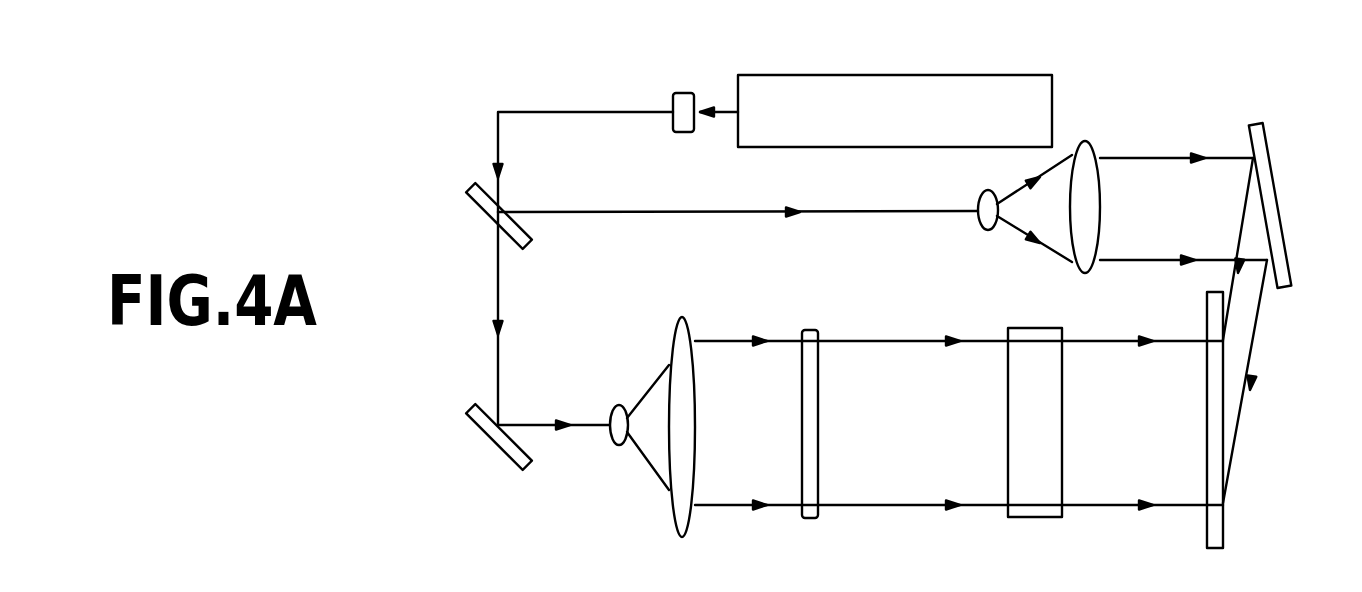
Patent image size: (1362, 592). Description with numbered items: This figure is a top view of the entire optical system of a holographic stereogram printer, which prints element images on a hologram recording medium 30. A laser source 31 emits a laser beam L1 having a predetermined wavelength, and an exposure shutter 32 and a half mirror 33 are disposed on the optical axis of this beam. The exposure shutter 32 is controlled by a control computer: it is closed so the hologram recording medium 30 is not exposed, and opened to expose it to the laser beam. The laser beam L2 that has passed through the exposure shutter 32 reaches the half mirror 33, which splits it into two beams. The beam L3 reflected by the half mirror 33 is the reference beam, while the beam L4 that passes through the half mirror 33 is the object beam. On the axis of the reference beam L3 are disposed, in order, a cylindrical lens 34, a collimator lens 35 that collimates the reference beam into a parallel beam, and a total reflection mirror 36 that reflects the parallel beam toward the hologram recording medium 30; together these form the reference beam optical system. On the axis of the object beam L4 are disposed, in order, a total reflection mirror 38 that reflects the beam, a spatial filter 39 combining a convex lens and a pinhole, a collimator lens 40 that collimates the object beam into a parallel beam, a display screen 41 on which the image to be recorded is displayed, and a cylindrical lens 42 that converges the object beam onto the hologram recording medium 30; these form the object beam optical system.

The hologram recording medium 30 is at (1207, 300).
The laser source 31 is at (797, 147).
The exposure shutter 32 is at (681, 133).
The half mirror 33 is at (474, 206).
The cylindrical lens 34 is at (980, 196).
The collimator lens 35 is at (1086, 145).
The total reflection mirror 36 is at (1260, 143).
The total reflection mirror 38 is at (478, 432).
The spatial filter 39 is at (612, 411).
The collimator lens 40 is at (681, 318).
The display screen 41 is at (813, 330).
The cylindrical lens 42 is at (1030, 328).
The laser beam L1 is at (722, 117).
The laser beam L2 is at (498, 140).
The reference beam L3 is at (607, 214).
The object beam L4 is at (498, 292).